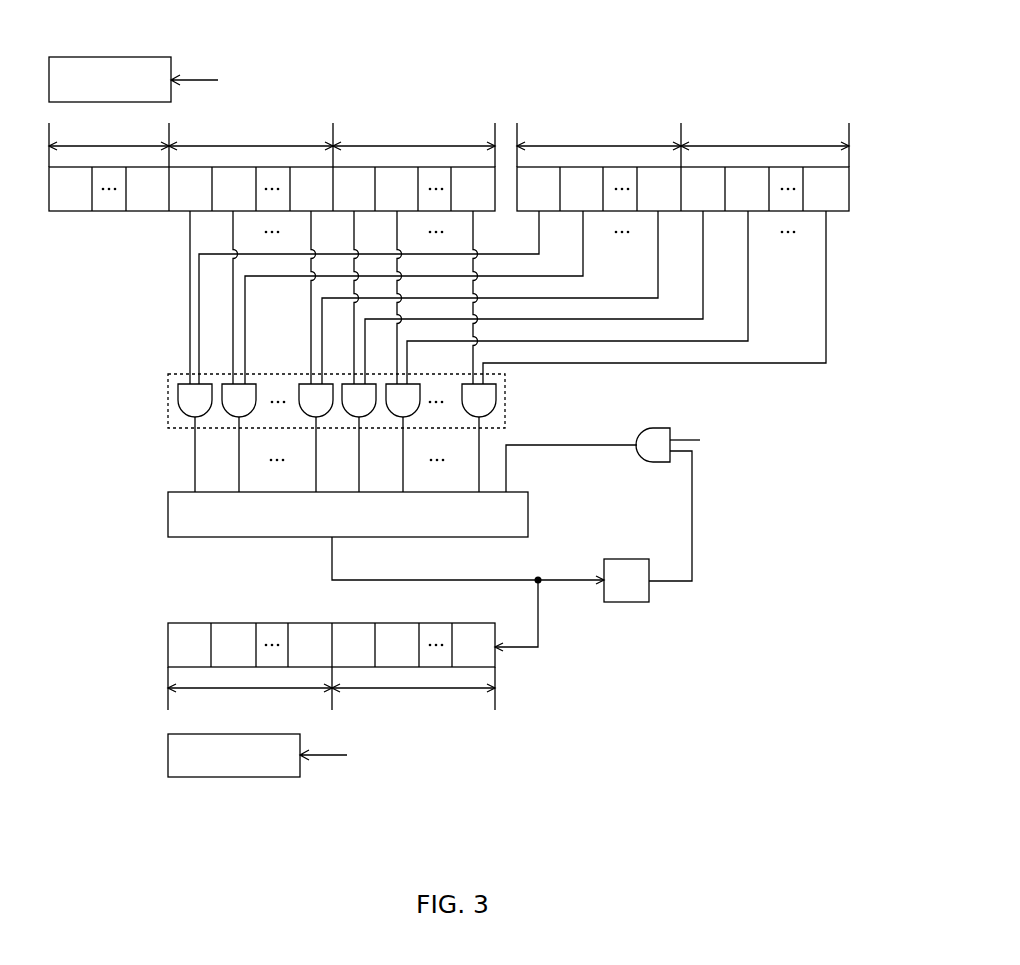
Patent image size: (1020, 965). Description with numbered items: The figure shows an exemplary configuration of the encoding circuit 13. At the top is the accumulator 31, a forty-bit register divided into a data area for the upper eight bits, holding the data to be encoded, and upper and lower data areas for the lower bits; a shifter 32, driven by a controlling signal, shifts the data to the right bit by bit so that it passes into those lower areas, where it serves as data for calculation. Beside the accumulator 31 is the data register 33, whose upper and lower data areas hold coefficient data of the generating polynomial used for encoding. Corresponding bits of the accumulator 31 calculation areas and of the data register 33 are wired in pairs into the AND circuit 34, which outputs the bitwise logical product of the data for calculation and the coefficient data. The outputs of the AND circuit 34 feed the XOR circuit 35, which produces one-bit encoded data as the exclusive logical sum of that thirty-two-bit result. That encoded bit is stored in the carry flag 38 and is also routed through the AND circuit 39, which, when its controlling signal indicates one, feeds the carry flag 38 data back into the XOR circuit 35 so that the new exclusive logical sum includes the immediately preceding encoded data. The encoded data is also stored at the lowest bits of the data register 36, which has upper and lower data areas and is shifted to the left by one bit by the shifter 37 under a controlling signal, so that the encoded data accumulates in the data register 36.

The encoding circuit 13 is at (508, 68).
The accumulator (ax) 31 is at (140, 211).
The shifter 32 is at (113, 57).
The data register (r0) 33 is at (703, 167).
The AND circuit (first logic circuit) 34 is at (505, 407).
The XOR circuit (second logic circuit) 35 is at (528, 515).
The data register (rs) 36 is at (225, 623).
The shifter 37 is at (222, 777).
The carry flag 38 is at (625, 602).
The AND circuit 39 is at (656, 462).